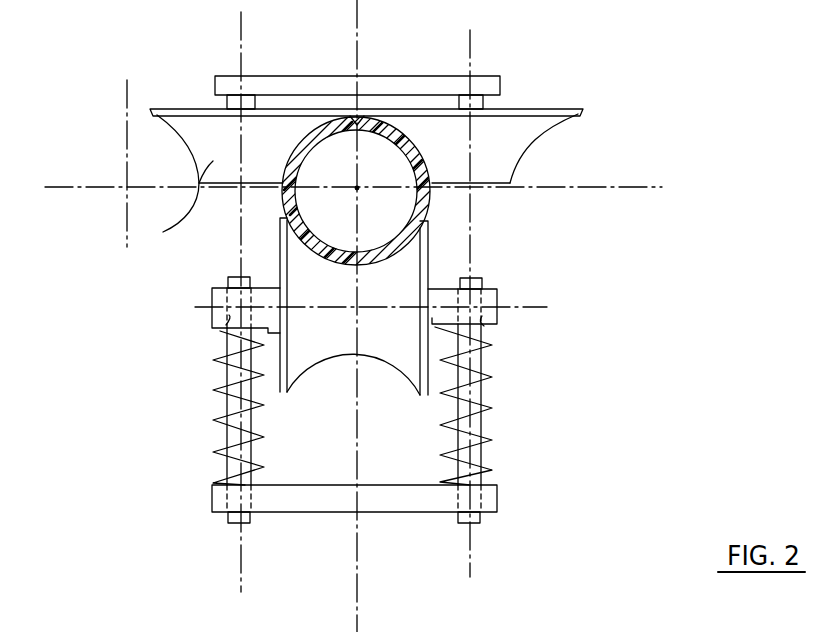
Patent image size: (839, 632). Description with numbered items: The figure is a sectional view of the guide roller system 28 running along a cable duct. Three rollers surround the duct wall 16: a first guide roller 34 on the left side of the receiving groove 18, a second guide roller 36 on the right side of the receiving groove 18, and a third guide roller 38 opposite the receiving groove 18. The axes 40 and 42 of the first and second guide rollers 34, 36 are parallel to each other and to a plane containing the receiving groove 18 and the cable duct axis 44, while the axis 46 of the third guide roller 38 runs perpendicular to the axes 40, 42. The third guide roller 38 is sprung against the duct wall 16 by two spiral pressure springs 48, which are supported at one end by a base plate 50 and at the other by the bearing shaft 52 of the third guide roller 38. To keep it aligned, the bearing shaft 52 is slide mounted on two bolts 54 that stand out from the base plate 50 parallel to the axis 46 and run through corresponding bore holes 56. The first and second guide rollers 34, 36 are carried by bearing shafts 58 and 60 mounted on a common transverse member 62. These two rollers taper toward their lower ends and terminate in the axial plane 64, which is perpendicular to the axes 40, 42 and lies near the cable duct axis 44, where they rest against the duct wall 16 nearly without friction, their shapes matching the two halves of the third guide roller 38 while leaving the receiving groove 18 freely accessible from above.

The duct wall 16 is at (430, 157).
The receiving groove 18 is at (358, 110).
The guide roller system 28 is at (534, 458).
The first guide roller 34 is at (209, 189).
The second guide roller 36 is at (531, 126).
The third guide roller 38 is at (308, 349).
The axis of the first guide roller 40 is at (245, 108).
The axis of the second guide roller 42 is at (470, 104).
The cable duct axis 44 is at (358, 191).
The axis of the third guide roller 46 is at (498, 319).
The spiral pressure springs 48 is at (450, 454).
The base plate 50 is at (487, 502).
The bearing shaft of the third guide roller 52 is at (494, 289).
The bolts 54 is at (252, 450).
The bore holes 56 is at (226, 325).
The bearing shaft of the first guide roller 58 is at (233, 100).
The bearing shaft of the second guide roller 60 is at (470, 104).
The transverse member 62 is at (387, 83).
The axial plane 64 is at (70, 186).